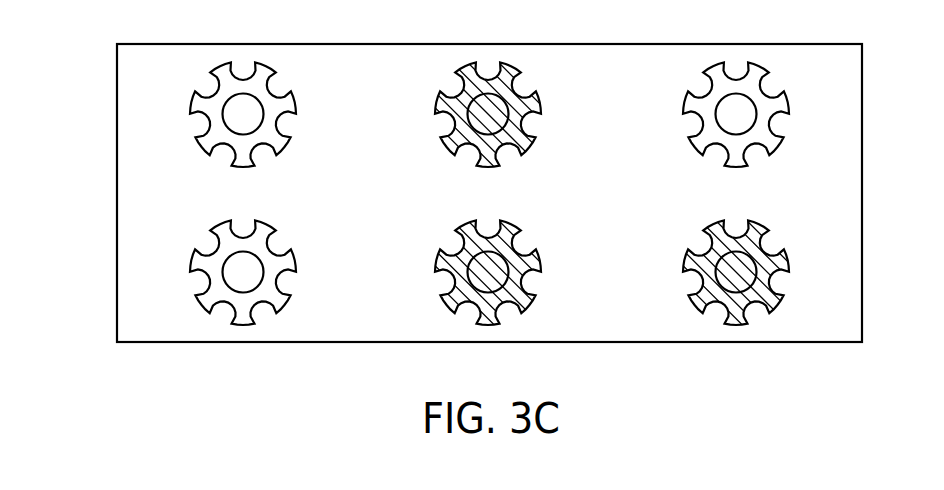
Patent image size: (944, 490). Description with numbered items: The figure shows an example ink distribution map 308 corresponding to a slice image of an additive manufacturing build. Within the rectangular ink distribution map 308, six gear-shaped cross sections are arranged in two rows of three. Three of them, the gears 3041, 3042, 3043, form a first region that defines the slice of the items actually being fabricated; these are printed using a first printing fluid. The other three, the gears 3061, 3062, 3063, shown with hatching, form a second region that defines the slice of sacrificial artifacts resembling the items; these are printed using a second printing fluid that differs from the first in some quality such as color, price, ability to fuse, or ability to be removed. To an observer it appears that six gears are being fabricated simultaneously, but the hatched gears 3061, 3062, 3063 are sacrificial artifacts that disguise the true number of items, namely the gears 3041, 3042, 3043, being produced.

The ink distribution map 308 is at (117, 118).
The gear 3041 is at (261, 63).
The gear 3042 is at (755, 63).
The gear 3043 is at (248, 324).
The gear 3061 is at (510, 63).
The gear 3062 is at (491, 324).
The gear 3063 is at (738, 324).